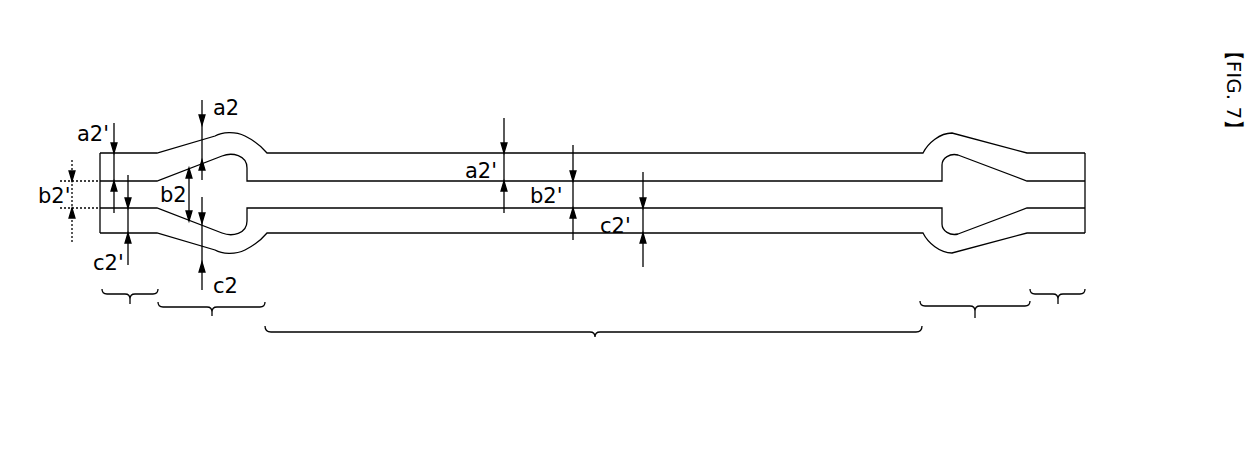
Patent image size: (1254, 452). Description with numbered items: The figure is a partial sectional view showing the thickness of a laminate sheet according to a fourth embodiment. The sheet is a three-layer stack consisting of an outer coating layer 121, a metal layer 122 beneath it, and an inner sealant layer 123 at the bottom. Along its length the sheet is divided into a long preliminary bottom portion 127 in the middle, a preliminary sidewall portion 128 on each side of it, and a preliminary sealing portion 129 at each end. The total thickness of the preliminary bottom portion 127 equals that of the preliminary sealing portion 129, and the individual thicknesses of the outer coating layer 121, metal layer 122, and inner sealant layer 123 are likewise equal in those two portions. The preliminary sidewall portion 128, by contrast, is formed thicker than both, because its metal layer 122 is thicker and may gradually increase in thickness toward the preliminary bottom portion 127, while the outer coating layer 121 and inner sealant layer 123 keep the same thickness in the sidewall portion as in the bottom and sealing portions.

The outer coating layer 121 is at (1070, 163).
The metal layer 122 is at (1070, 192).
The inner sealant layer 123 is at (1065, 218).
The preliminary bottom portion 127 is at (593, 348).
The preliminary sidewall portion 128 is at (594, 325).
The preliminary sealing portion 129 is at (593, 314).